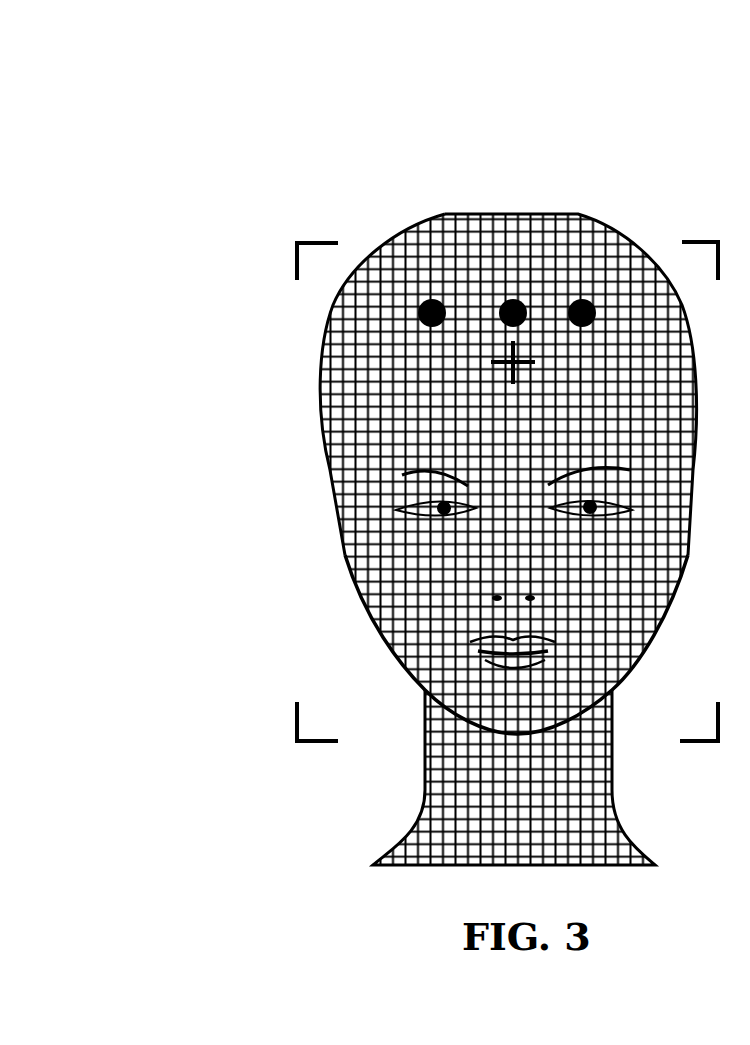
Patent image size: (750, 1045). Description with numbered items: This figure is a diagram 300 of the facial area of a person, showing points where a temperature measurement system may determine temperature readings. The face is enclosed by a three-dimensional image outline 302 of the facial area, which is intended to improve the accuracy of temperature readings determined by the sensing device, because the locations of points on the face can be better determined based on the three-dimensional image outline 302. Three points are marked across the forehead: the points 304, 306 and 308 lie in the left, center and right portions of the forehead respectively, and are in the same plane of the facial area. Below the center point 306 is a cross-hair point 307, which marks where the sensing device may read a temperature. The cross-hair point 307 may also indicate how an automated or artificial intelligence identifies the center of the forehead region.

The diagram 300 is at (86, 86).
The three-dimensional image outline 302 is at (297, 246).
The point 304 is at (432, 299).
The point 306 is at (513, 299).
The cross-hair point 307 is at (515, 343).
The point 308 is at (582, 299).